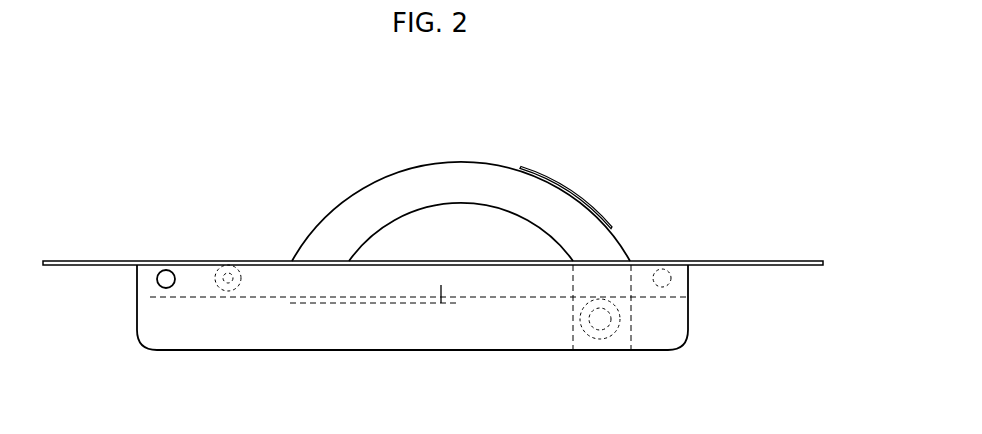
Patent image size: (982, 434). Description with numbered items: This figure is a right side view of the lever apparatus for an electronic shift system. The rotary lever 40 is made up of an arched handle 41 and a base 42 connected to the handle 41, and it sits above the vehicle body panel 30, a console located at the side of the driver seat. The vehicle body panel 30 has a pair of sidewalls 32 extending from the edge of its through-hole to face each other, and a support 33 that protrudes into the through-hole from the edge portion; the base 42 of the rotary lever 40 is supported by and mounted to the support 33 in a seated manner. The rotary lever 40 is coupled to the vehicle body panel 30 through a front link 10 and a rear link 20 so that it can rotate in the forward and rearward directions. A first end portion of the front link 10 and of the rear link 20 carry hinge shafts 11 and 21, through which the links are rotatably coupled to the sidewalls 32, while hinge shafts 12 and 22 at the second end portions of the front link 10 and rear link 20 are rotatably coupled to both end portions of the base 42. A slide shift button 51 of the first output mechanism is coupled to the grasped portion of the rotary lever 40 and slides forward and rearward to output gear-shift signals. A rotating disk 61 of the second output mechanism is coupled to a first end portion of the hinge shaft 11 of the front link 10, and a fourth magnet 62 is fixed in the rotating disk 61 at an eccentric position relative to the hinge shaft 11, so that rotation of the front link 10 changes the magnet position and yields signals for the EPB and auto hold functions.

The front link 10 is at (640, 305).
The hinge shaft 11 is at (590, 315).
The hinge shaft 12 is at (662, 275).
The rear link 20 is at (200, 286).
The hinge shaft 21 is at (157, 281).
The hinge shaft 22 is at (232, 286).
The vehicle body panel 30 is at (112, 260).
The sidewalls 32 is at (357, 340).
The support 33 is at (383, 303).
The rotary lever 40 is at (408, 160).
The arched handle 41 is at (480, 160).
The base 42 is at (441, 303).
The slide shift button 51 is at (560, 184).
The rotating disk 61 is at (620, 327).
The fourth magnet 62 is at (602, 332).